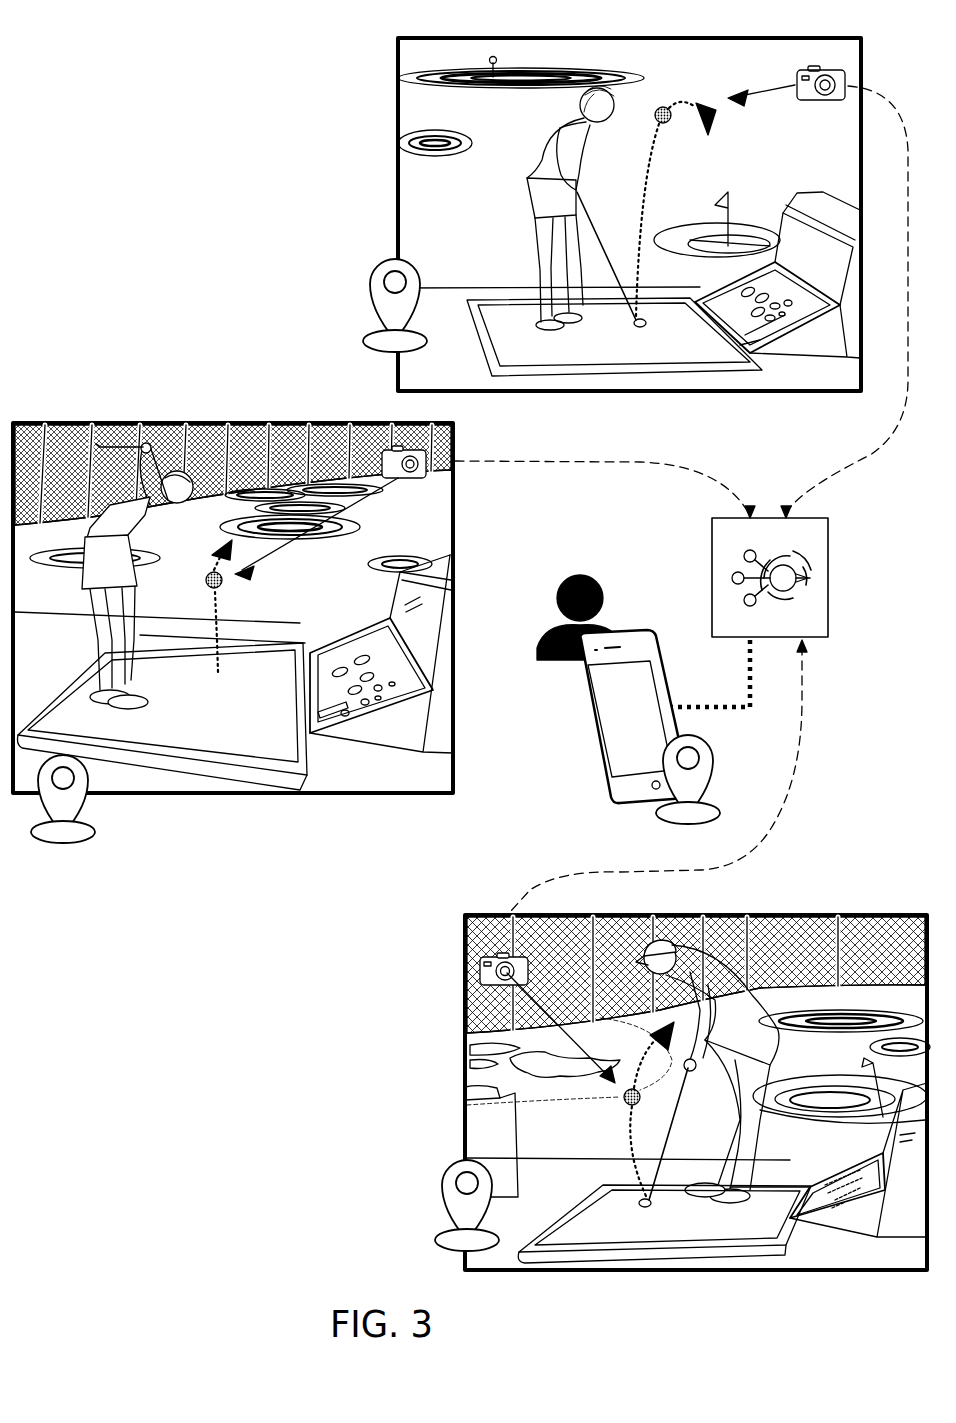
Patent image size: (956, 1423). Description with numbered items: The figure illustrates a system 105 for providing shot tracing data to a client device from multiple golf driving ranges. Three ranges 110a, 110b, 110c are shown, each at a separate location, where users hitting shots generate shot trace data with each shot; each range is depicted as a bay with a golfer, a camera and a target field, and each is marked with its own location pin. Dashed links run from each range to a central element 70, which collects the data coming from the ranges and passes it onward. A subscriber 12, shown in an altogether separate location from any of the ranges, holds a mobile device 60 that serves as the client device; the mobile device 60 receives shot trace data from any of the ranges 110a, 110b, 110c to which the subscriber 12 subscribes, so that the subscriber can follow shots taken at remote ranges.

The system 105 is at (471, 637).
The range 110a is at (222, 408).
The range 110b is at (670, 58).
The range 110c is at (789, 906).
The server / hub 70 is at (812, 518).
The subscriber 12 is at (590, 580).
The mobile device 60 is at (628, 636).